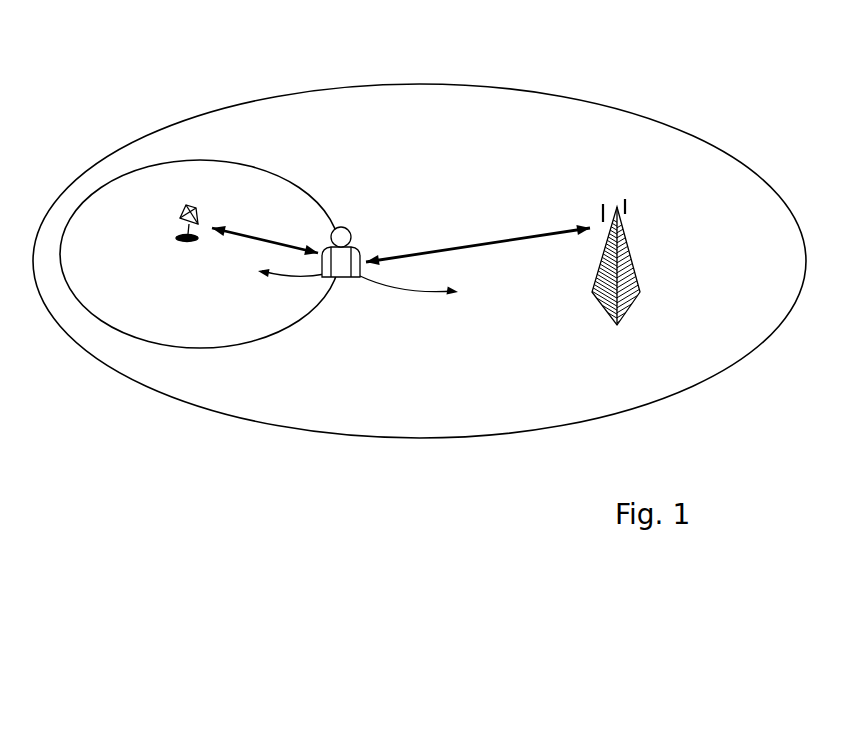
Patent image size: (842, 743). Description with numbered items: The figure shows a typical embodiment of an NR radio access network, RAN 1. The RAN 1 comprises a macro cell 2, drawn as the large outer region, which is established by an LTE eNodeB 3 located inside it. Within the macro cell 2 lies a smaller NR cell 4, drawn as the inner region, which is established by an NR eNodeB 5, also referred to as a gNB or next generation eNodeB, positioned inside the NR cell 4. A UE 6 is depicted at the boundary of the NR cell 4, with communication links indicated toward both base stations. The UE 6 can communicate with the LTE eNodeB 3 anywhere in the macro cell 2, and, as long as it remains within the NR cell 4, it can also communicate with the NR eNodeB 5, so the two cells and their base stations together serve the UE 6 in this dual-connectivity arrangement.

The radio access network 1 is at (537, 46).
The macro cell 2 is at (408, 85).
The LTE eNodeB 3 is at (630, 238).
The NR cell 4 is at (275, 178).
The NR eNodeB 5 is at (206, 212).
The UE 6 is at (350, 224).